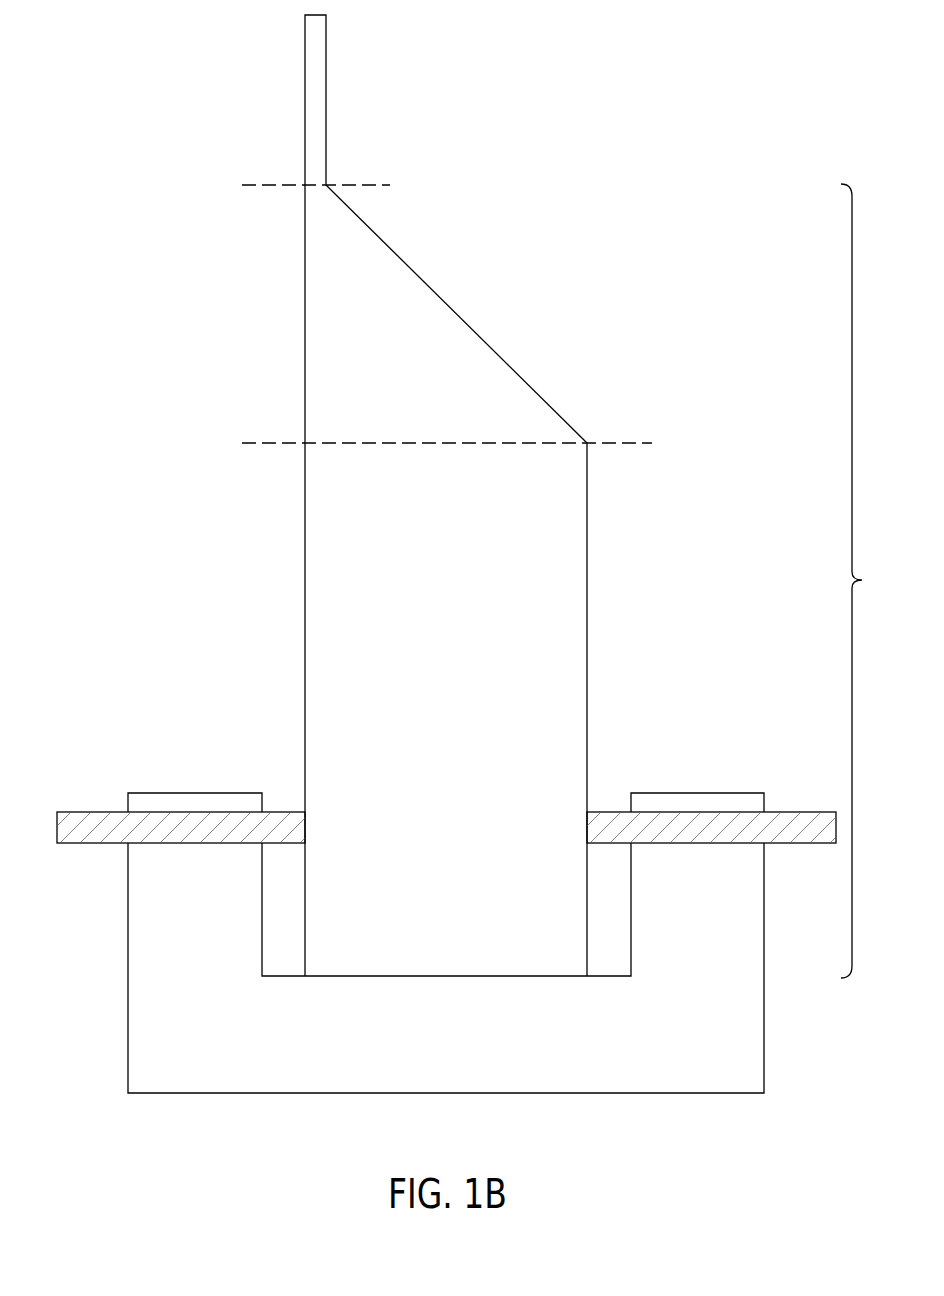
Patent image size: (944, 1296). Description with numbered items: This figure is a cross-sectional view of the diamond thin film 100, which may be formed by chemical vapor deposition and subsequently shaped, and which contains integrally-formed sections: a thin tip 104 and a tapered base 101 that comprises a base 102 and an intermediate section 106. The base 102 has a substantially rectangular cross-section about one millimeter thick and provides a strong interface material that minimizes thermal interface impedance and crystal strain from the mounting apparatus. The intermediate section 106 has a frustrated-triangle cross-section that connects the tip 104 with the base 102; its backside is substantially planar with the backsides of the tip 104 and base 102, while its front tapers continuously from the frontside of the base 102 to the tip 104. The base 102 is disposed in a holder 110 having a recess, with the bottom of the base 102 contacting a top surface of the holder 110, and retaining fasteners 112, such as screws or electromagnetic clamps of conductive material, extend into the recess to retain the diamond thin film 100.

The diamond thin film 100 is at (680, 96).
The tapered base 101 is at (869, 581).
The base 102 is at (330, 674).
The tip 104 is at (290, 94).
The intermediate section 106 is at (330, 340).
The holder 110 is at (738, 935).
The retaining fasteners 112 is at (88, 812).